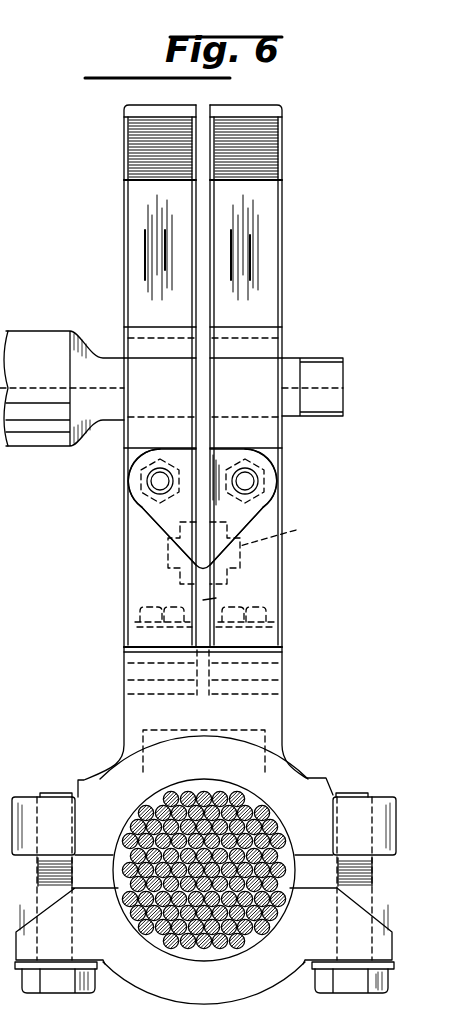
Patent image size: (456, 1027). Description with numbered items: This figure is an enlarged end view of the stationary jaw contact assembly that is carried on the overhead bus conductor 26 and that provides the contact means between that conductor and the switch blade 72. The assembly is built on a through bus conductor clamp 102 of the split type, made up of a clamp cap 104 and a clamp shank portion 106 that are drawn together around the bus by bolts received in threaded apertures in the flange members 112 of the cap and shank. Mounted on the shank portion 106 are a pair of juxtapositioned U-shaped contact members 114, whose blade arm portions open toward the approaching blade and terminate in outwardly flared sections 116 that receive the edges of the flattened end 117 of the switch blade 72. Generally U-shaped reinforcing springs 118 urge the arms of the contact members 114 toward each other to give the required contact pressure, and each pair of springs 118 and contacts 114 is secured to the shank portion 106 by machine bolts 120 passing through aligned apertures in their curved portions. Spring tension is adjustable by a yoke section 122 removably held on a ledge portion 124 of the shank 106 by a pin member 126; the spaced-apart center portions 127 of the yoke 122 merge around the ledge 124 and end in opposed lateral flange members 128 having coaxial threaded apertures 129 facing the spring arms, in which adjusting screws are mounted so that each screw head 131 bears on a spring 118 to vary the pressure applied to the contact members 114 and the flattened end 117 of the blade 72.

The overhead bus conductor 26 is at (266, 800).
The switch blade 72 is at (52, 438).
The through bus conductor clamp 102 is at (343, 772).
The clamp cap 104 is at (147, 987).
The clamp shank portion 106 is at (124, 705).
The flange member 112 is at (14, 856).
The U-shaped contact member 114 is at (128, 222).
The outwardly flared section 116 is at (128, 158).
The flattened end of the switch blade 117 is at (302, 357).
The U-shaped reinforcing spring 118 is at (128, 455).
The machine bolt 120 is at (137, 609).
The yoke section 122 is at (163, 522).
The ledge portion 124 is at (216, 598).
The pin member 126 is at (281, 533).
The center portion of the yoke 127 is at (180, 571).
The flange member of the yoke 128 is at (218, 460).
The threaded aperture 129 is at (161, 470).
The head of the spring tension adjusting screw 131 is at (130, 505).